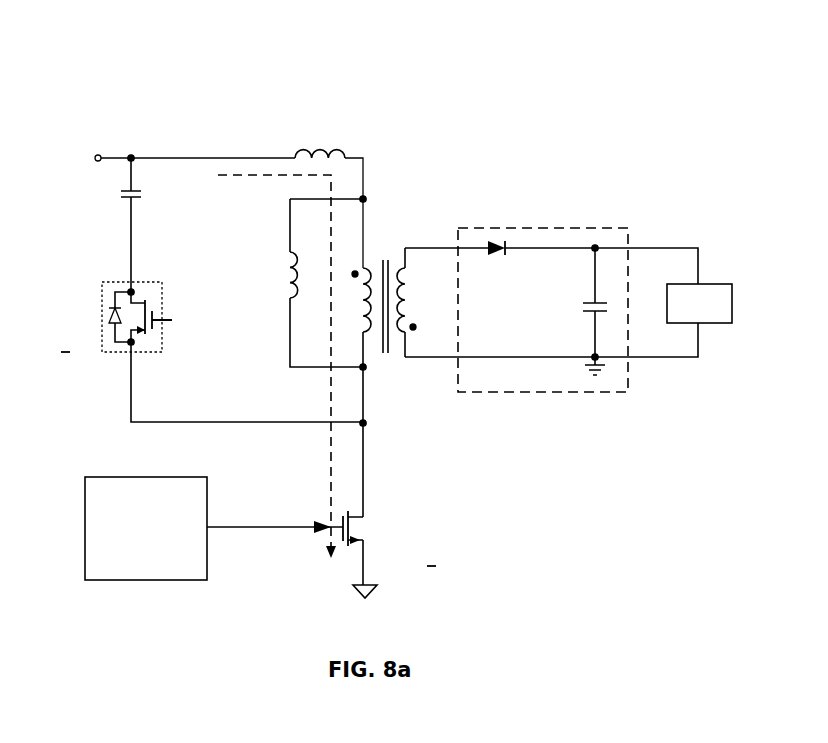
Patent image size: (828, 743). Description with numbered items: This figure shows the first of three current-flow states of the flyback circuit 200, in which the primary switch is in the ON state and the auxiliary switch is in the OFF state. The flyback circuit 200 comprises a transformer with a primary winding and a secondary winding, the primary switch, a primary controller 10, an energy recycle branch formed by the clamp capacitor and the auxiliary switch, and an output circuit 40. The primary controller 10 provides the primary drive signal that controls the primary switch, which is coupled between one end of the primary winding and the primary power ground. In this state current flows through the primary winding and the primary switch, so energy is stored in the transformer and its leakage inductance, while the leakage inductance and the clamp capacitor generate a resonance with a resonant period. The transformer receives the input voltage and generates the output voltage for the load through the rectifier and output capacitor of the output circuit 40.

The flyback circuit 200 is at (337, 66).
The primary controller 10 is at (85, 527).
The output circuit 40 is at (487, 394).